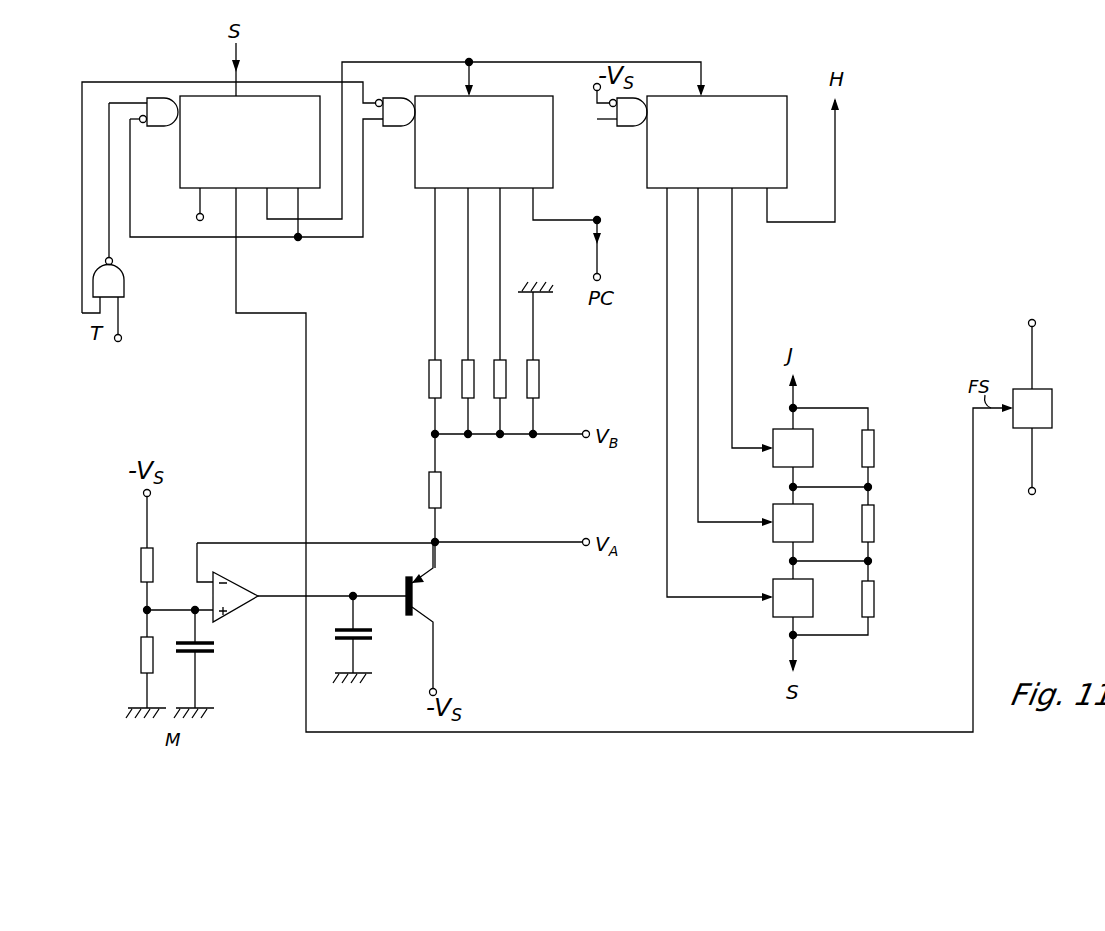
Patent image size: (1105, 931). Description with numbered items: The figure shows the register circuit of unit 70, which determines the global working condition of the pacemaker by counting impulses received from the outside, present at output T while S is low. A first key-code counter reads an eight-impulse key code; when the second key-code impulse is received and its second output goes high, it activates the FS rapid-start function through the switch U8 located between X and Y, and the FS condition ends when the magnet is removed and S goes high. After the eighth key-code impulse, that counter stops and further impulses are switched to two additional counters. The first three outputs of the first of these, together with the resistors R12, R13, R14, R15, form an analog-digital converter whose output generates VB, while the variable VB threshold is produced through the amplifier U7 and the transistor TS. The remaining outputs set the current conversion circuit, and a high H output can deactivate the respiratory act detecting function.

The unit 70 is at (78, 106).
The resistor R12 is at (433, 368).
The resistor R13 is at (466, 375).
The resistor R14 is at (503, 373).
The resistor R15 is at (540, 380).
The operational amplifier U7 is at (238, 601).
The switch U8 is at (1048, 410).
The transistor TS is at (429, 615).